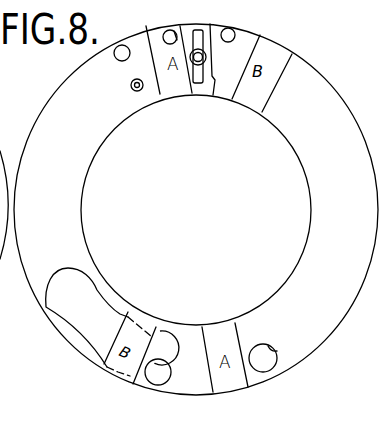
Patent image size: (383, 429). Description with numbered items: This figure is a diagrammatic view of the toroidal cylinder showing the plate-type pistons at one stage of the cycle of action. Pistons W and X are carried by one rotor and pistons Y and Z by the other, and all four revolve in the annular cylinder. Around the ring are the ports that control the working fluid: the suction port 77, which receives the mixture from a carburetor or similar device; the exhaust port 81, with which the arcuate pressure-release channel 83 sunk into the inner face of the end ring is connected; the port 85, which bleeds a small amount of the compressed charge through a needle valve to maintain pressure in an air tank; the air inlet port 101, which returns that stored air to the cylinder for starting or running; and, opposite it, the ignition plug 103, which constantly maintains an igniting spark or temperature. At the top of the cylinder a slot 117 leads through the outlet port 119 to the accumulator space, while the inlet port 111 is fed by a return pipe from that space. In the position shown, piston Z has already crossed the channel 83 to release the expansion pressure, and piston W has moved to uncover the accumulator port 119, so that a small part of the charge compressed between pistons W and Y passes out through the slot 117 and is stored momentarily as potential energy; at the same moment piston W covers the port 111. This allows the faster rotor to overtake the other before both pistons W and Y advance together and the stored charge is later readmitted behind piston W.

The suction port 77 is at (277, 353).
The exhaust port 81 is at (170, 367).
The arcuate pressure-release channel 83 is at (100, 300).
The port 85 is at (235, 32).
The air inlet port 101 is at (119, 60).
The ignition plug 103 is at (131, 89).
The inlet port 111 is at (163, 29).
The slot 117 is at (209, 69).
The outlet port 119 is at (206, 57).
The piston W is at (159, 96).
The piston X is at (237, 326).
The piston Y is at (277, 85).
The piston Z is at (160, 330).